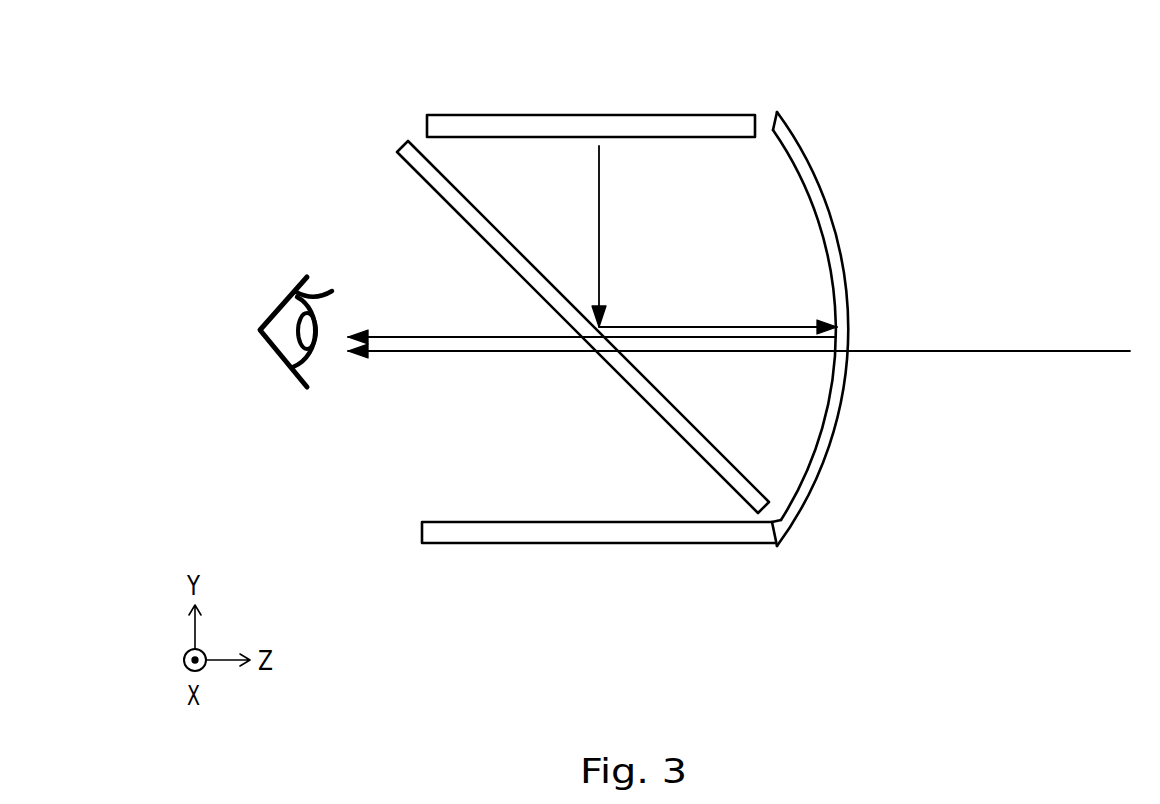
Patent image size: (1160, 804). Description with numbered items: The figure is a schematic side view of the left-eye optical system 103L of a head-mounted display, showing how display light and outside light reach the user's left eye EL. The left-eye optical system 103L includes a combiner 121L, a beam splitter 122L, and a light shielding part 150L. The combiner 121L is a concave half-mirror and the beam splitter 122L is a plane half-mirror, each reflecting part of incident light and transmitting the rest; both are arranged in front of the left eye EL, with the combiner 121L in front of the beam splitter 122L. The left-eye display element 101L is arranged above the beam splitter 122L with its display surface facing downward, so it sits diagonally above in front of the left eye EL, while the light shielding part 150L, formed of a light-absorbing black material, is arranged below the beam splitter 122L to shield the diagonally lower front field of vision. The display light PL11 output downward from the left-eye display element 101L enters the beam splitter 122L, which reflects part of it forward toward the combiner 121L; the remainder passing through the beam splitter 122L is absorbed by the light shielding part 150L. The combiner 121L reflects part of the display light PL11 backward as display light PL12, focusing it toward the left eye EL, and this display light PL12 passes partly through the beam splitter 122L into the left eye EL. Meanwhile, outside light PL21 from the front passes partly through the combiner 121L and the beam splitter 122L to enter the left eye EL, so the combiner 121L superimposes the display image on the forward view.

The left-eye display element 101L is at (636, 115).
The left-eye optical system 103L is at (912, 329).
The combiner 121L is at (825, 443).
The beam splitter 122L is at (432, 172).
The light shielding part 150L is at (453, 543).
The display light PL11 is at (599, 215).
The display light PL12 is at (418, 335).
The outside light PL21 is at (1085, 351).
The left eye EL is at (277, 355).